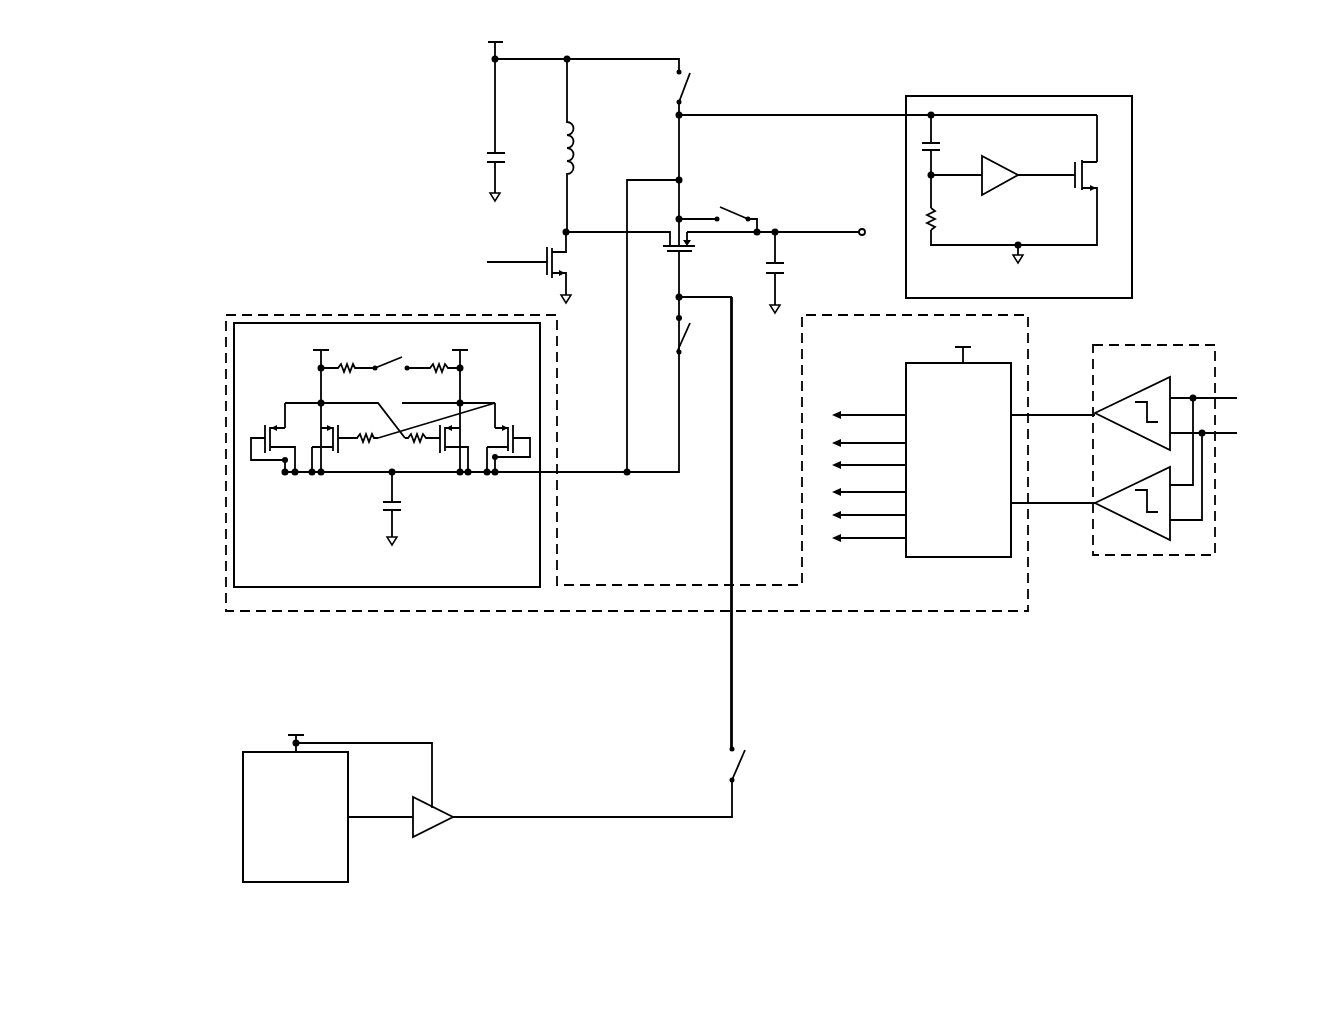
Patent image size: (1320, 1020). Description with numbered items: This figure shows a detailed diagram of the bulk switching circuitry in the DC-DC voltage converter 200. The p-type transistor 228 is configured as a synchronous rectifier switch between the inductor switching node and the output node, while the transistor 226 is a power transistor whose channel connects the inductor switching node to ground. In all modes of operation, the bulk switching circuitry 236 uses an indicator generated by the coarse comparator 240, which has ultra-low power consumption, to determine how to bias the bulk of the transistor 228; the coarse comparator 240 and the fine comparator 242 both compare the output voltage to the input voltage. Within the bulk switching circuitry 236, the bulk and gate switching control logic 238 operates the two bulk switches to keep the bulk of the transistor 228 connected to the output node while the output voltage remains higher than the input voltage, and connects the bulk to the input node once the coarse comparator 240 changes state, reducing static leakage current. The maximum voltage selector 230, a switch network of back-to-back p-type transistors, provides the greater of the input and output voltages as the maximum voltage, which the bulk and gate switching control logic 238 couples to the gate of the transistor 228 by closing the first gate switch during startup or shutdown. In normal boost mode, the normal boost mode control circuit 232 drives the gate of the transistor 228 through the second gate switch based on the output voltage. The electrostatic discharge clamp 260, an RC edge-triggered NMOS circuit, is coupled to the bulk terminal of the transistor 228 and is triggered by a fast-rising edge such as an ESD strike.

The DC-DC voltage converter 200 is at (200, 80).
The transistor 226 is at (545, 251).
The p-type transistor 228 is at (678, 289).
The maximum voltage selector 230 is at (430, 455).
The normal boost mode control circuit 232 is at (511, 589).
The bulk switching circuitry 236 is at (660, 463).
The bulk and gate switching control logic 238 is at (963, 440).
The coarse comparator 240 is at (1143, 387).
The fine comparator 242 is at (1139, 475).
The electrostatic discharge clamp 260 is at (1019, 197).